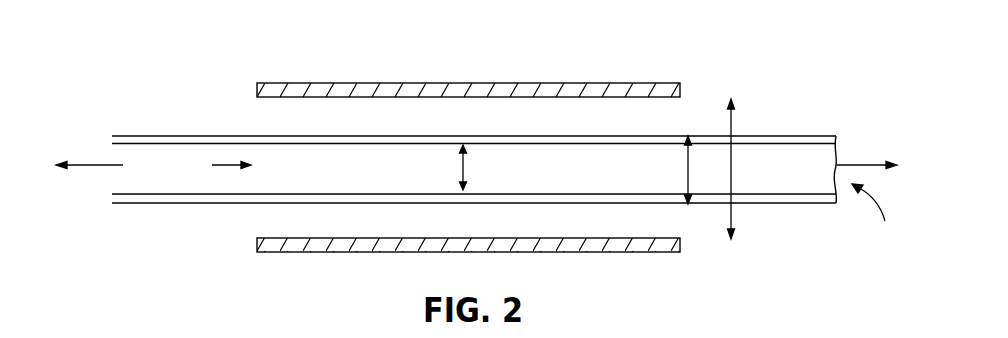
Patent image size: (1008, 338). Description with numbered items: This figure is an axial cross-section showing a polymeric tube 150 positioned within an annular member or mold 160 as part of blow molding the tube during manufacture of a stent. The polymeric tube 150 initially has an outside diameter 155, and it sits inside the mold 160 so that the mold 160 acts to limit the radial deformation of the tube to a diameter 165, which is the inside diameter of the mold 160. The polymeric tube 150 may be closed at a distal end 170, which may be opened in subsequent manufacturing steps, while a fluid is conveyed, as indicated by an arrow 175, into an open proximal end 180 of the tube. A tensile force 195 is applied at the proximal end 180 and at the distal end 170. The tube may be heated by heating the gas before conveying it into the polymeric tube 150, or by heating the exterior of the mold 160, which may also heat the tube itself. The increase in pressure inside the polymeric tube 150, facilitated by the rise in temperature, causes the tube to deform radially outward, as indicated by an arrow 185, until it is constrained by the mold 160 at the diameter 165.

The polymeric tube 150 is at (343, 136).
The open proximal end 180 is at (117, 181).
The annular member or mold 160 is at (645, 93).
The arrow indicating radial deformation 185 is at (470, 171).
The outside diameter 155 is at (694, 170).
The inside diameter of mold 165 is at (736, 169).
The arrow indicating fluid conveyance 175 is at (218, 165).
The tensile force 195 is at (102, 165).
The distal end 170 is at (876, 218).